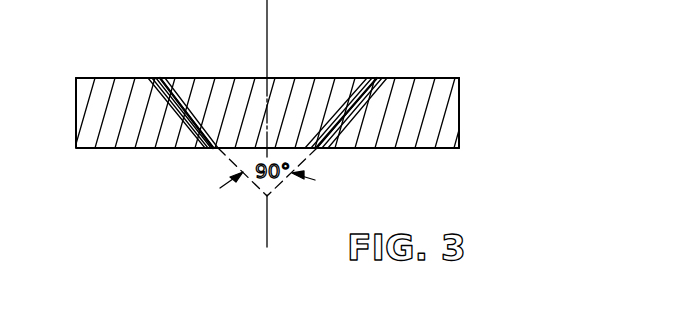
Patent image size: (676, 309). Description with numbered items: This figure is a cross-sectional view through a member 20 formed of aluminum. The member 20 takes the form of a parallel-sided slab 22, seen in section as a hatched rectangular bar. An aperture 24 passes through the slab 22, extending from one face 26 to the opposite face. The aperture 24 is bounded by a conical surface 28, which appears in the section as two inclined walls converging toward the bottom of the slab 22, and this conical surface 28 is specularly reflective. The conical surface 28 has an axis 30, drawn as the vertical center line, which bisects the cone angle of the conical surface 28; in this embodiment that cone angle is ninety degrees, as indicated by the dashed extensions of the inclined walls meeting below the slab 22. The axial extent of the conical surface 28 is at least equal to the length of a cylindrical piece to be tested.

The member 20 is at (414, 73).
The parallel-sided slab 22 is at (460, 95).
The aperture 24 is at (278, 147).
The face 26 is at (102, 77).
The conical surface 28 is at (176, 103).
The axis 30 is at (268, 40).